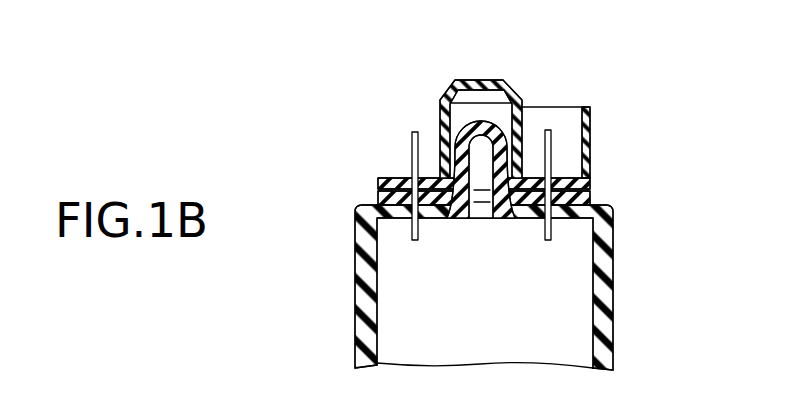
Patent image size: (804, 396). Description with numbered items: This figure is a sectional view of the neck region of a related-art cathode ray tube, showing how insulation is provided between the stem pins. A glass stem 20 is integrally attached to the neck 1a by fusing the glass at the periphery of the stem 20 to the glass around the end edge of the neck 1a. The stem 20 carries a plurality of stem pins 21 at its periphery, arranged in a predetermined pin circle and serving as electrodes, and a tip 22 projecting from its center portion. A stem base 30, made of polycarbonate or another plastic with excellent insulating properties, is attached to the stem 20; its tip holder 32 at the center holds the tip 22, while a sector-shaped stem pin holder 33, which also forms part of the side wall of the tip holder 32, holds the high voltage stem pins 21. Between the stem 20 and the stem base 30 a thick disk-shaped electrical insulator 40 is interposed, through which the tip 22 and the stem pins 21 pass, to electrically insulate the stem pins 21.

The neck 1a is at (614, 337).
The stem 20 is at (618, 218).
The stem pins 21 is at (409, 135).
The tip 22 is at (490, 145).
The stem base 30 is at (596, 104).
The tip holder 32 is at (508, 90).
The stem pin holder 33 is at (592, 138).
The electrical insulator 40 is at (378, 192).